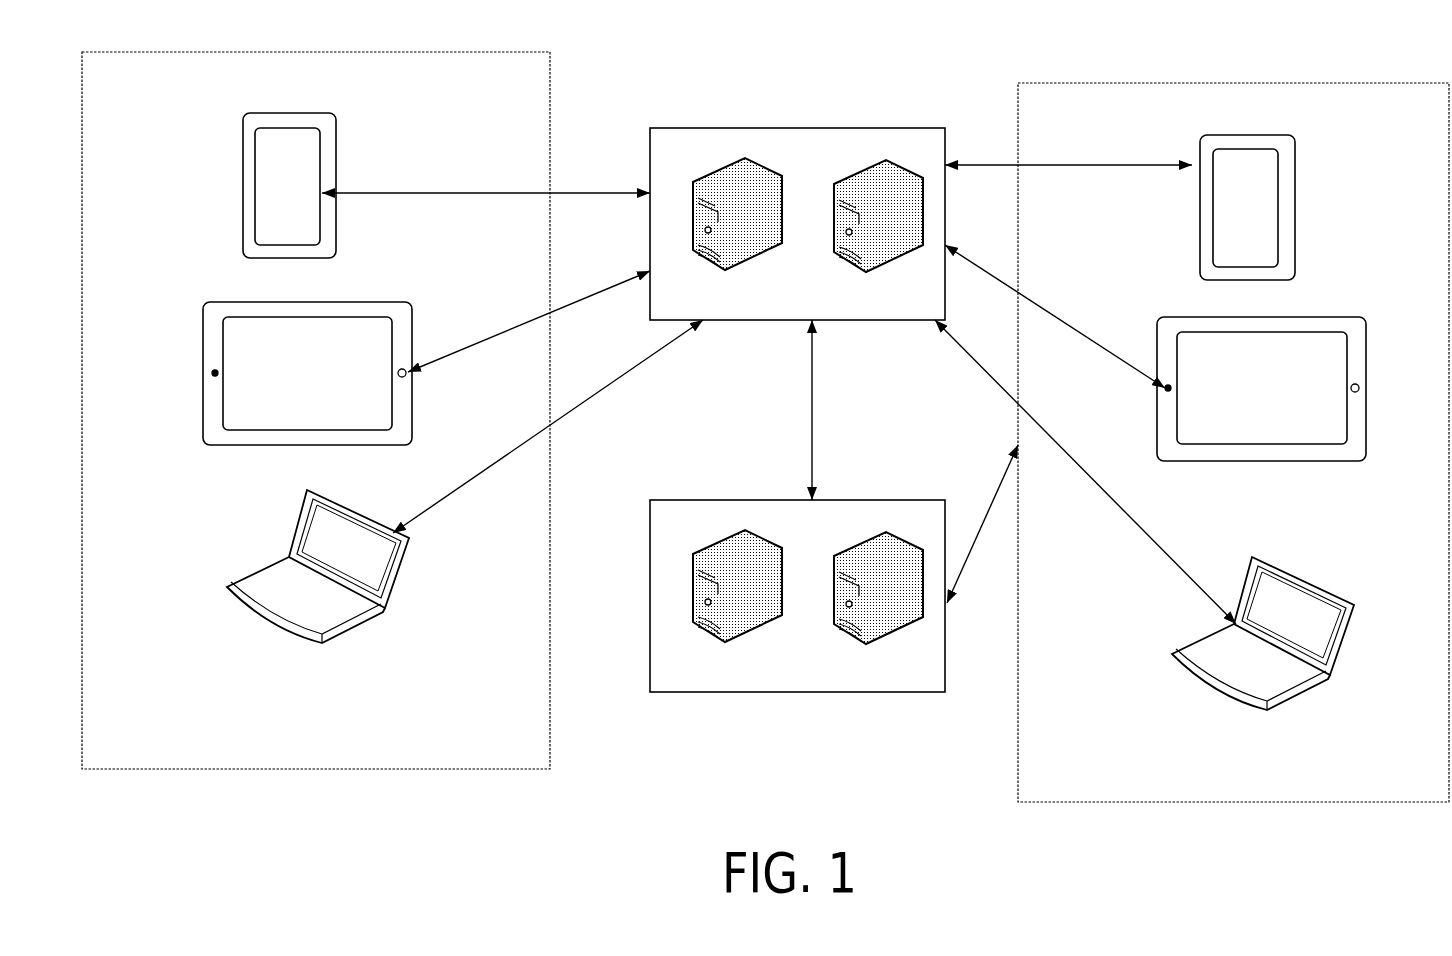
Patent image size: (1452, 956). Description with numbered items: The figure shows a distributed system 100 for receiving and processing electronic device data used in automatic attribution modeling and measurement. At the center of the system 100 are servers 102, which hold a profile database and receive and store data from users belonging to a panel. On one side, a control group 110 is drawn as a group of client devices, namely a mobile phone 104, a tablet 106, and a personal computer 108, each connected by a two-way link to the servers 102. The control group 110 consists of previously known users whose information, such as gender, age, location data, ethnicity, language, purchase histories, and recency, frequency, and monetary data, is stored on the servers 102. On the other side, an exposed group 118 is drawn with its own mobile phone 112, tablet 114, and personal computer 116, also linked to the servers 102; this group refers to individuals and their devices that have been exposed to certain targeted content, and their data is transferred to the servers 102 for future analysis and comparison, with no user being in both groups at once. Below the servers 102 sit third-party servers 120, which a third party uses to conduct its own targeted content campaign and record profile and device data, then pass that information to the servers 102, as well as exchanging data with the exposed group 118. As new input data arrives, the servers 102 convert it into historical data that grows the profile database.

The system 100 is at (849, 78).
The servers 102 is at (778, 307).
The mobile phone 104 is at (268, 197).
The tablet 106 is at (286, 385).
The personal computer 108 is at (322, 561).
The control group 110 is at (470, 104).
The mobile phone 112 is at (1227, 219).
The tablet 114 is at (1241, 400).
The personal computer 116 is at (1267, 627).
The exposed group 118 is at (1372, 134).
The third-party servers 120 is at (778, 681).